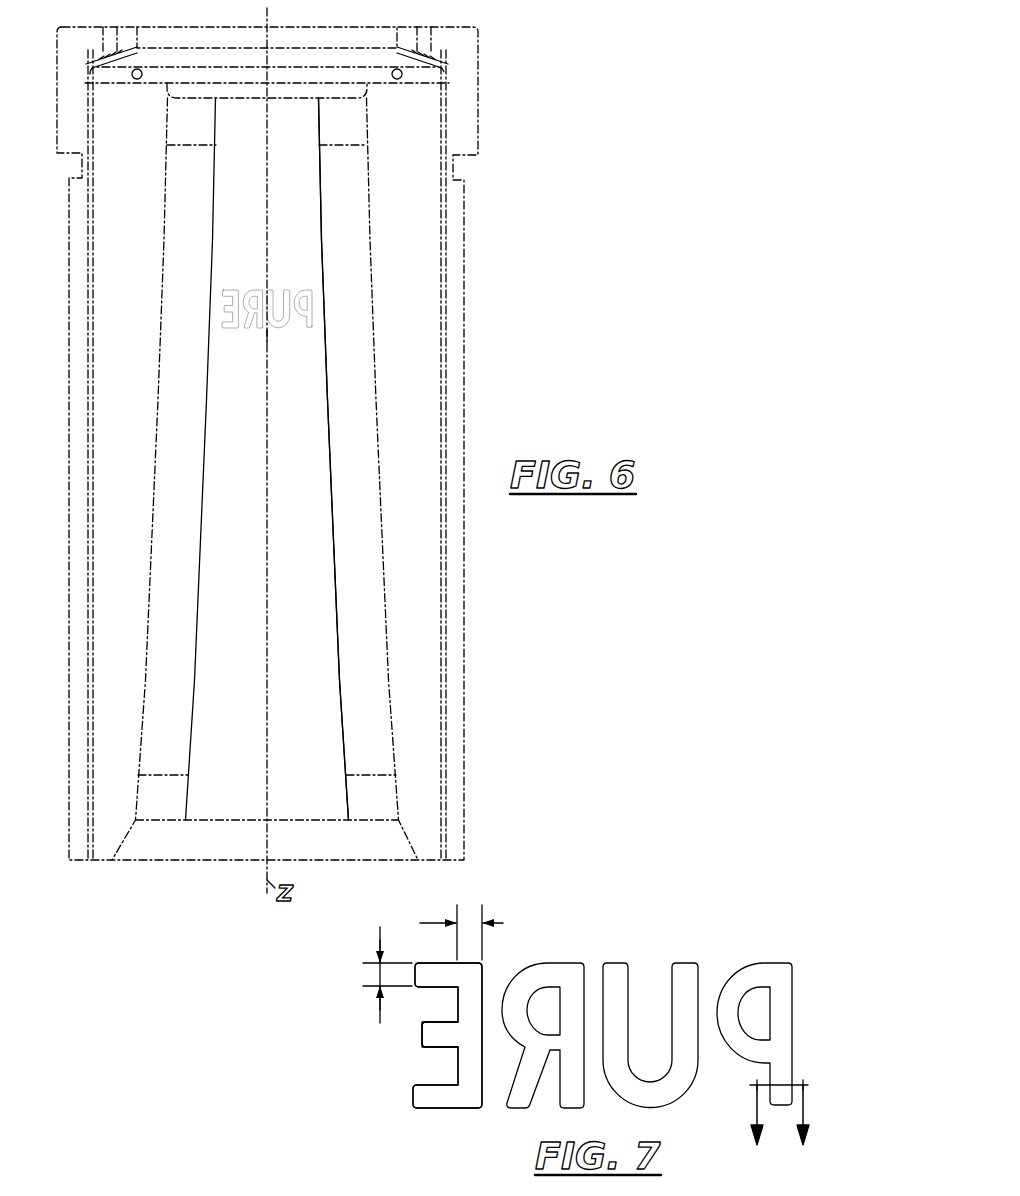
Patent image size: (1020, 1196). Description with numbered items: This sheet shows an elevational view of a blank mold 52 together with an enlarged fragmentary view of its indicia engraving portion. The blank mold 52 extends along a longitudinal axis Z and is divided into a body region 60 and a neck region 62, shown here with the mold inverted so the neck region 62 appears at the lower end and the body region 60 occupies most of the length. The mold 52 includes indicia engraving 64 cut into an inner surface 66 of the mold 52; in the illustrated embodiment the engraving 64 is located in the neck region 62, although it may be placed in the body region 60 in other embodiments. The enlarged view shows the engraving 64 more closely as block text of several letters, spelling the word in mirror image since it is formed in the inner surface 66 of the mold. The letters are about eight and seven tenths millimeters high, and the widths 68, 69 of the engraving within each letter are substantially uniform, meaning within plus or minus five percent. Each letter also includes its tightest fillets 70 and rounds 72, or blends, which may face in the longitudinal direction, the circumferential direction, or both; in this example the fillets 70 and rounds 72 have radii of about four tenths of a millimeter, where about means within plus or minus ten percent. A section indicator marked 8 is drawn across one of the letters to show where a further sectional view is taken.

In FIG. 6, the blank mold 52 is at (556, 92).
In FIG. 6, the body region 60 is at (358, 702).
In FIG. 6, the neck region 62 is at (332, 302).
In FIG. 6, the indicia engraving 64 is at (230, 283).
In FIG. 7, the indicia engraving 64 is at (684, 898).
In FIG. 6, the inner surface 66 is at (306, 372).
In FIG. 7, the width 68 is at (380, 1010).
In FIG. 7, the width 69 is at (505, 922).
In FIG. 7, the fillets 70 is at (452, 1049).
In FIG. 7, the rounds 72 is at (411, 1104).
In FIG. 7, the section line 8- 8 is at (781, 1129).